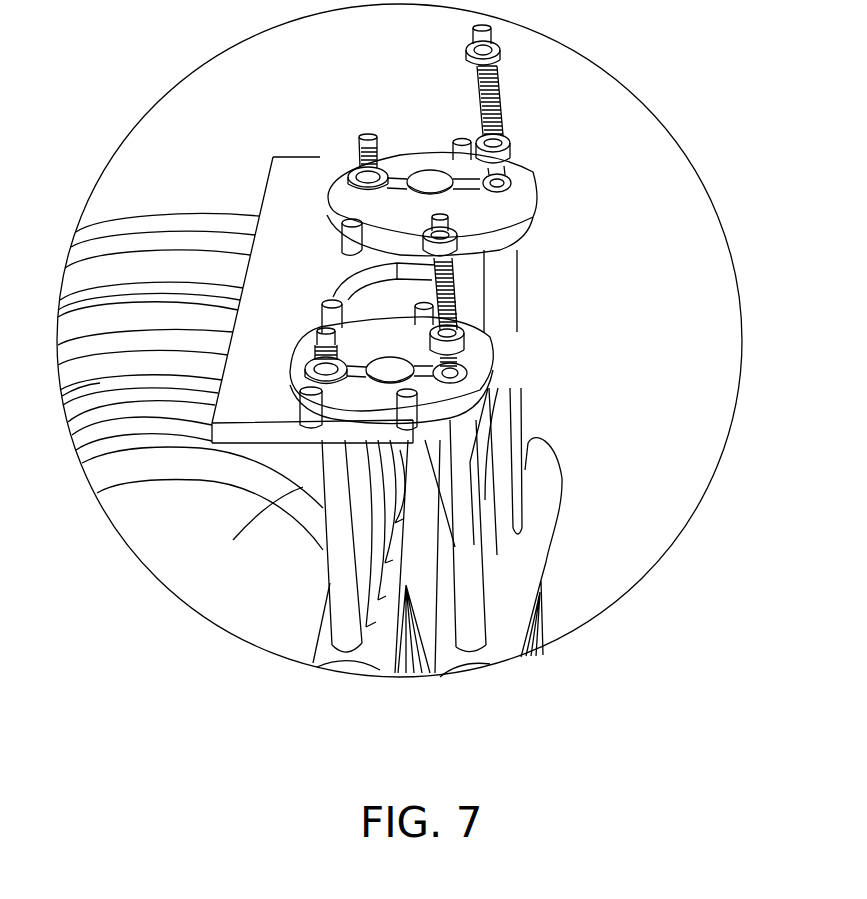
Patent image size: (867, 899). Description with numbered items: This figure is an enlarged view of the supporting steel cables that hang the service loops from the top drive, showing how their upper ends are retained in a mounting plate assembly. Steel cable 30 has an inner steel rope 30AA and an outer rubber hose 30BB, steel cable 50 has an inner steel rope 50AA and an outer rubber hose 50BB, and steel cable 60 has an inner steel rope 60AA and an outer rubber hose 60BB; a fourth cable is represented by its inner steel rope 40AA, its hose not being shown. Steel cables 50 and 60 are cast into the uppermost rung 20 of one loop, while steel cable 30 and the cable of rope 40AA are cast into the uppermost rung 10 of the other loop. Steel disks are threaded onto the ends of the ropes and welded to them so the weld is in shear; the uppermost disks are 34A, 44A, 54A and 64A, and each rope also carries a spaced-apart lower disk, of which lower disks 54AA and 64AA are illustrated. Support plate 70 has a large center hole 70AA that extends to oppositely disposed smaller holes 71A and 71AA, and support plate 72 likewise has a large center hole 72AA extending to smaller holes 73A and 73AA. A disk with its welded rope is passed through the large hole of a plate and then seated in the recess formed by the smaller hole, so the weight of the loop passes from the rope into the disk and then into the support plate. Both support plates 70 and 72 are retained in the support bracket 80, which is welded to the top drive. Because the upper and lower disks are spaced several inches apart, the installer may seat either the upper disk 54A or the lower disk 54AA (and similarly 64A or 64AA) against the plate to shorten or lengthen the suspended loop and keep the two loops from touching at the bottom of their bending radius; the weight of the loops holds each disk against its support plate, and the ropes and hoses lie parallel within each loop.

The uppermost rung 10 is at (387, 663).
The uppermost rung 20 is at (525, 568).
The steel cable 30 is at (317, 593).
The inner steel rope 30AA is at (317, 347).
The outer rubber hose 30BB is at (345, 643).
The uppermost disk 34A is at (310, 333).
The inner steel rope 40AA is at (377, 165).
The uppermost disk 44A is at (355, 172).
The steel cable 50 is at (497, 621).
The inner steel rope 50AA is at (440, 300).
The outer rubber hose 50BB is at (472, 642).
The uppermost disk 54A is at (527, 222).
The lower disk 54AA is at (488, 342).
The steel cable 60 is at (528, 287).
The inner steel rope 60AA is at (497, 90).
The outer rubber hose 60BB is at (502, 257).
The uppermost disk 64A is at (505, 48).
The lower disk 64AA is at (513, 147).
The support plate 70 is at (348, 393).
The large center hole 70AA is at (390, 380).
The smaller hole 71A is at (468, 377).
The smaller hole 71AA is at (300, 410).
The support plate 72 is at (515, 193).
The large center hole 72AA is at (443, 193).
The smaller hole 73A is at (517, 165).
The smaller hole 73AA is at (400, 165).
The support bracket 80 is at (273, 173).